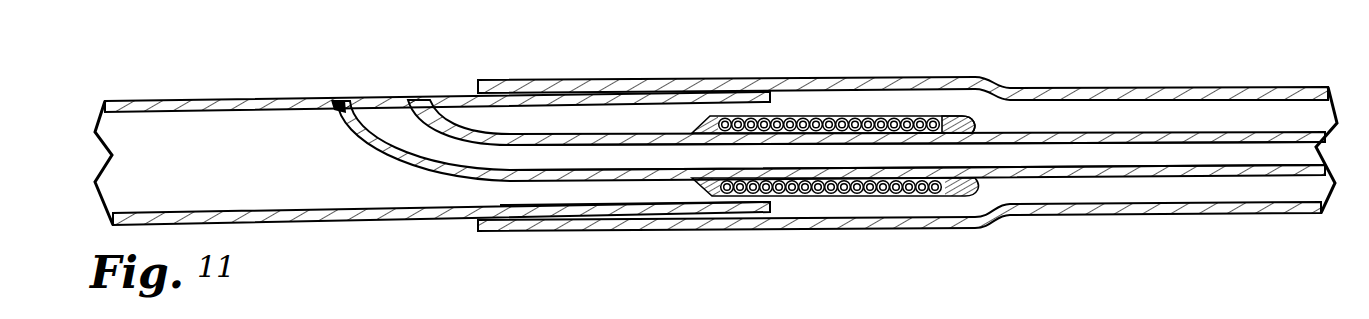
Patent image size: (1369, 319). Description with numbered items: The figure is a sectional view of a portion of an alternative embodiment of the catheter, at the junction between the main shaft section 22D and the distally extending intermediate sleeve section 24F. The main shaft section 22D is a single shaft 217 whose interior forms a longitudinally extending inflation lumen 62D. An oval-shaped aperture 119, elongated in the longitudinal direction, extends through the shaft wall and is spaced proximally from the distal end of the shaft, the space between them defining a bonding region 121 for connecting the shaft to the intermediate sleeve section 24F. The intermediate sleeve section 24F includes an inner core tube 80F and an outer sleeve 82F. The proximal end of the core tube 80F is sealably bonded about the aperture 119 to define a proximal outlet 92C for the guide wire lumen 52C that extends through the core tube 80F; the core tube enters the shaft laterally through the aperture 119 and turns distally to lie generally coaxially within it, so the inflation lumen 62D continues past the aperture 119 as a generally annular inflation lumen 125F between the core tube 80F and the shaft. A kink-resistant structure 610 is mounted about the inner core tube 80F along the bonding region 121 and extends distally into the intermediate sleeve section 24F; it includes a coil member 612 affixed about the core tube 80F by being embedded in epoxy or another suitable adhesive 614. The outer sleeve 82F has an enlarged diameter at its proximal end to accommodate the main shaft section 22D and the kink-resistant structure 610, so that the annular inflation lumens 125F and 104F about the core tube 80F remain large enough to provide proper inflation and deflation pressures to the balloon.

The inflation lumen 62D is at (432, 187).
The main shaft section 22D is at (289, 228).
The single shaft 217 is at (360, 227).
The proximal outlet 92C is at (375, 105).
The aperture 119 is at (398, 104).
The bonding region 121 is at (906, 86).
The annular inflation lumen 125F is at (565, 193).
The kink-resistant structure 610 is at (869, 115).
The coil member 612 is at (852, 118).
The adhesive 614 is at (953, 118).
The intermediate sleeve section 24F is at (907, 142).
The outer sleeve 82F is at (1237, 88).
The inner core tube 80F is at (820, 115).
The guide wire lumen 52C is at (917, 155).
The annular inflation lumen 104F is at (1110, 187).